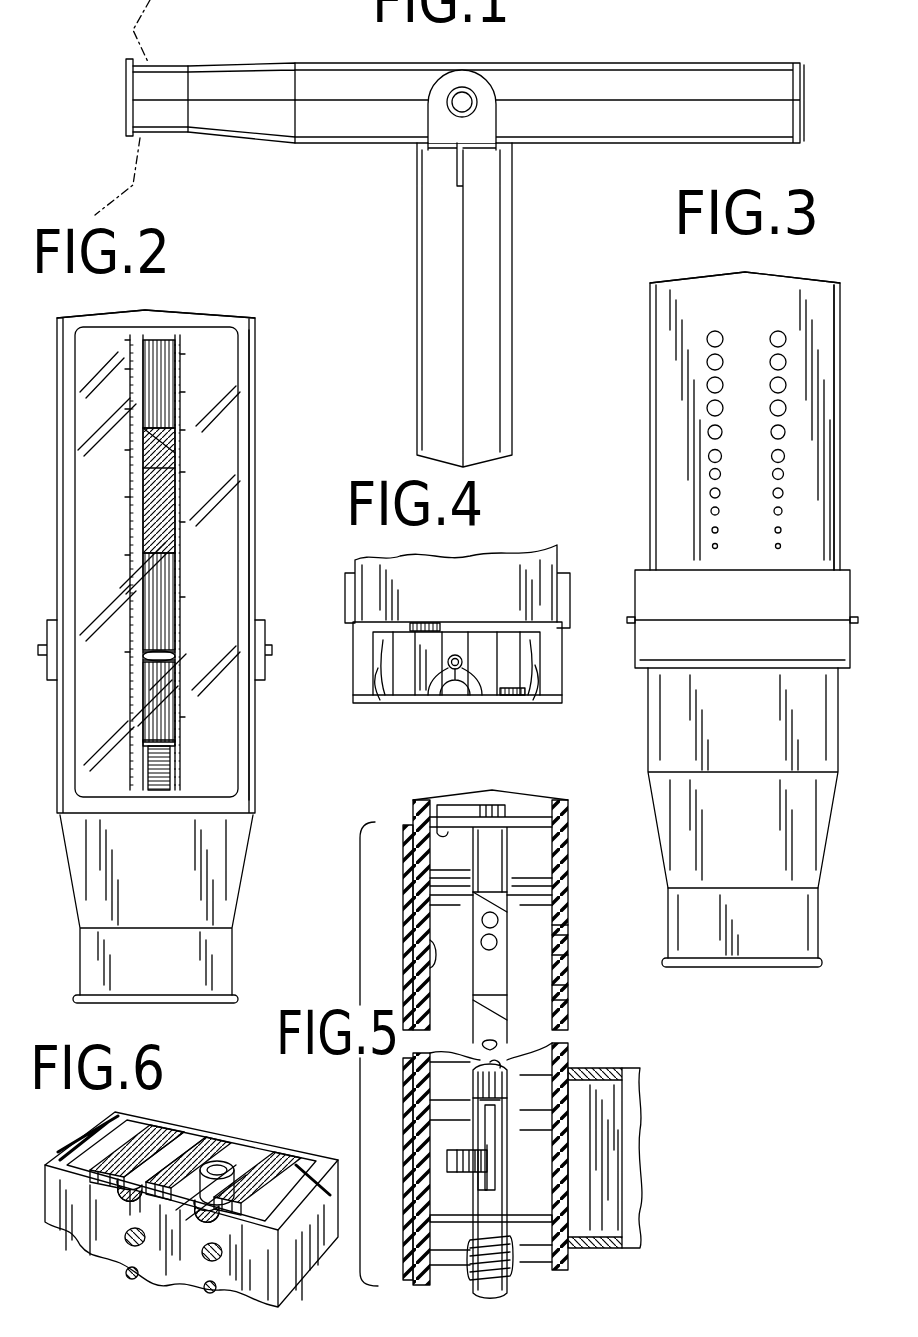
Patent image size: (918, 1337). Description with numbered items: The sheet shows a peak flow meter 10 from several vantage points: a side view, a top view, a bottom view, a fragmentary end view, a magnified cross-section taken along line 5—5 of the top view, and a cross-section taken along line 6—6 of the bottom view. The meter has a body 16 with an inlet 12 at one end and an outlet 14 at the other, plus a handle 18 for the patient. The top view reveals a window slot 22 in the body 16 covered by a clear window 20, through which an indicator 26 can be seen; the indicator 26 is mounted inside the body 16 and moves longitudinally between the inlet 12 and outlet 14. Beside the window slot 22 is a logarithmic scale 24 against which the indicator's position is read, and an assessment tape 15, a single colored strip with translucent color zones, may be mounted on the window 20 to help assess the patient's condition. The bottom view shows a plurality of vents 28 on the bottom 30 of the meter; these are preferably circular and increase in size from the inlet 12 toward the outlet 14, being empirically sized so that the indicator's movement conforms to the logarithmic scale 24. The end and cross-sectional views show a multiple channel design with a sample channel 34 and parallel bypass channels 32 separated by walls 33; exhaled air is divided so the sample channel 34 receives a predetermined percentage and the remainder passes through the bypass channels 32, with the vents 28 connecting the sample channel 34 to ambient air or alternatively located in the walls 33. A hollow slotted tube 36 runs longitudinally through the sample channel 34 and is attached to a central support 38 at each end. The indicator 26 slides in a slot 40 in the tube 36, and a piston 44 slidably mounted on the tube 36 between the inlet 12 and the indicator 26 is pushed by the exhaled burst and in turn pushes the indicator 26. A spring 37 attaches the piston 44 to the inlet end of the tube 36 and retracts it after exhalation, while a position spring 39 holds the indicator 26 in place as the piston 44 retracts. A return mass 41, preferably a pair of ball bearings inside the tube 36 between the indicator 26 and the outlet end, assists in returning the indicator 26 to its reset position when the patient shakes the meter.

In FIG. 2, the section line 5- 5 is at (175, 285).
In FIG. 3, the section line 6- 6 is at (618, 402).
In FIG. 1, the peak flow meter 10 is at (596, 54).
In FIG. 2, the peak flow meter 10 is at (55, 470).
In FIG. 3, the peak flow meter 10 is at (770, 277).
In FIG. 1, the inlet 12 is at (127, 112).
In FIG. 2, the inlet 12 is at (88, 1000).
In FIG. 3, the inlet 12 is at (719, 968).
In FIG. 1, the outlet 14 is at (803, 72).
In FIG. 2, the outlet 14 is at (185, 311).
In FIG. 3, the outlet 14 is at (703, 282).
In FIG. 4, the outlet 14 is at (530, 700).
In FIG. 5, the outlet 14 is at (556, 802).
In FIG. 2, the assessment tape 15 is at (150, 425).
In FIG. 1, the body 16 is at (378, 108).
In FIG. 2, the body 16 is at (255, 392).
In FIG. 3, the body 16 is at (840, 790).
In FIG. 1, the handle 18 is at (440, 312).
In FIG. 3, the handle 18 is at (840, 650).
In FIG. 4, the handle 18 is at (533, 588).
In FIG. 2, the window 20 is at (90, 337).
In FIG. 4, the window 20 is at (456, 663).
In FIG. 6, the window 20 is at (202, 1120).
In FIG. 2, the window slot 22 is at (160, 345).
In FIG. 2, the logarithmic scale 24 is at (160, 575).
In FIG. 2, the indicator 26 is at (150, 662).
In FIG. 5, the indicator 26 is at (448, 1148).
In FIG. 3, the vents 28 is at (718, 460).
In FIG. 5, the vents 28 is at (566, 995).
In FIG. 6, the vents 28 is at (126, 1233).
In FIG. 3, the bottom 30 is at (820, 312).
In FIG. 5, the bottom 30 is at (568, 892).
In FIG. 4, the bypass channel 32 is at (385, 695).
In FIG. 6, the bypass channel 32 is at (113, 1140).
In FIG. 4, the walls 33 is at (397, 655).
In FIG. 6, the walls 33 is at (130, 1180).
In FIG. 4, the sample channel 34 is at (418, 695).
In FIG. 5, the sample channel 34 is at (435, 955).
In FIG. 6, the sample channel 34 is at (155, 1157).
In FIG. 4, the hollow slotted tube 36 is at (468, 695).
In FIG. 5, the hollow slotted tube 36 is at (505, 1292).
In FIG. 6, the hollow slotted tube 36 is at (239, 1183).
In FIG. 5, the spring 37 is at (470, 1255).
In FIG. 4, the central support 38 is at (457, 655).
In FIG. 5, the position spring 39 is at (462, 1150).
In FIG. 5, the slot 40 is at (478, 1183).
In FIG. 6, the slot 40 is at (221, 1162).
In FIG. 5, the return mass 41 is at (480, 922).
In FIG. 5, the piston 44 is at (535, 1218).